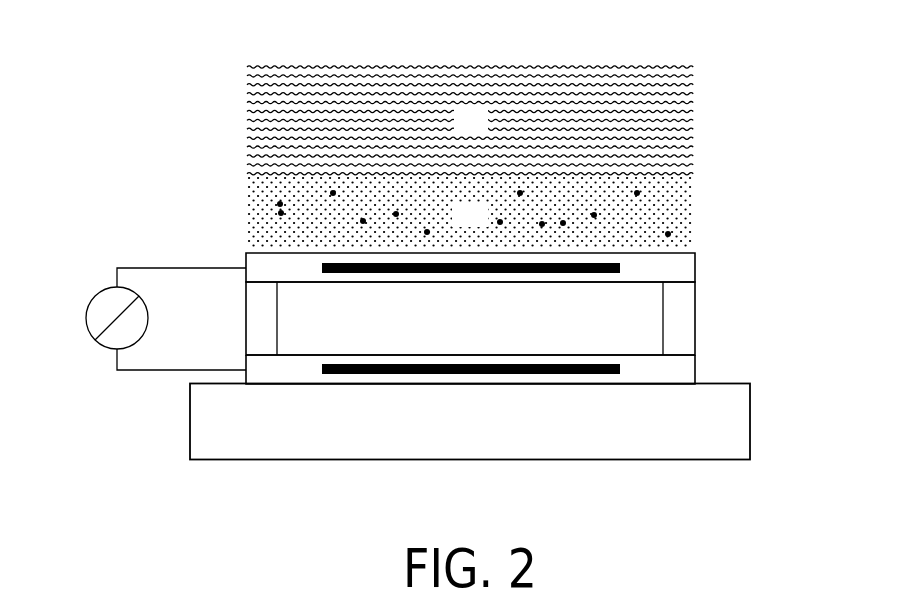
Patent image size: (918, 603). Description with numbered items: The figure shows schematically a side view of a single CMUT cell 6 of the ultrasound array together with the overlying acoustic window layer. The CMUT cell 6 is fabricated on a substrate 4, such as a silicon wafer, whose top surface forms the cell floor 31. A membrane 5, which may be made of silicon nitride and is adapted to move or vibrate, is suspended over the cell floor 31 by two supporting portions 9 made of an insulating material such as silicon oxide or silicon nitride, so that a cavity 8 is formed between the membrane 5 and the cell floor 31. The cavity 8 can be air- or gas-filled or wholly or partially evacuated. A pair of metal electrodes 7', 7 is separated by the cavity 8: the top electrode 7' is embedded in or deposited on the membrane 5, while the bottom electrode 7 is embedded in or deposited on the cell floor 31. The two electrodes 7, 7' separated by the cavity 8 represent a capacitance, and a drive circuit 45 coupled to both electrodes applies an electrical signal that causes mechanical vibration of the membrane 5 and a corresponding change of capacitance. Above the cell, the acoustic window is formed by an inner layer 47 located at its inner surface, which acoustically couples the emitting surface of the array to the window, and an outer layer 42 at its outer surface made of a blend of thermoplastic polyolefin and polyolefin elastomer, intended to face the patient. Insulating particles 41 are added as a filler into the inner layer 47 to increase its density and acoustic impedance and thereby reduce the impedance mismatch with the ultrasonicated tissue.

The CMUT cell 6 is at (186, 52).
The outer layer 42 is at (484, 131).
The inner layer 47 is at (484, 223).
The insulating particles 41 is at (679, 228).
The drive circuit 45 is at (100, 291).
The membrane 5 is at (260, 260).
The top electrode 7' is at (537, 272).
The bottom electrode 7 is at (496, 368).
The cavity 8 is at (477, 331).
The supporting portions 9 is at (260, 318).
The cell floor 31 is at (552, 354).
The substrate 4 is at (205, 421).